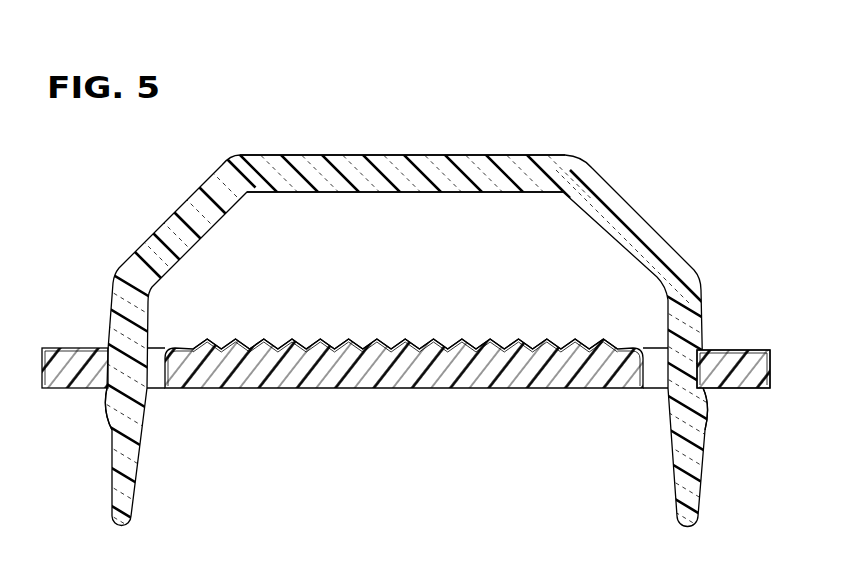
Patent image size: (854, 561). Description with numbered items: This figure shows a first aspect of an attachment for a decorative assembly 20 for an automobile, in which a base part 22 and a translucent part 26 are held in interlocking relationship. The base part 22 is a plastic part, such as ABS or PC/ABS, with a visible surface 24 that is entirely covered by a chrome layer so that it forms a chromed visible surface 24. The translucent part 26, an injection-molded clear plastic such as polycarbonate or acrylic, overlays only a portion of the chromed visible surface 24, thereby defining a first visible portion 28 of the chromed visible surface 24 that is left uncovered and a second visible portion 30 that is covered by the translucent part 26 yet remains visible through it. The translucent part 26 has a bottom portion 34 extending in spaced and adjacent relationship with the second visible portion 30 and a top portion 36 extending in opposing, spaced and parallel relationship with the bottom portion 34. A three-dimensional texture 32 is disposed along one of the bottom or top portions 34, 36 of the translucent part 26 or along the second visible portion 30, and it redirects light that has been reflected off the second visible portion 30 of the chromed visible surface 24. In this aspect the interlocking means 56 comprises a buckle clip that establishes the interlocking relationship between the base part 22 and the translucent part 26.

The decorative assembly 20 is at (641, 96).
The base part 22 is at (771, 390).
The visible surface 24 is at (632, 350).
The translucent part 26 is at (624, 195).
The first visible portion 28 is at (717, 350).
The second visible portion 30 is at (545, 343).
The three-dimensional texture 32 is at (362, 340).
The bottom portion 34 is at (438, 193).
The top portion 36 is at (428, 152).
The interlocking means 56 is at (101, 396).